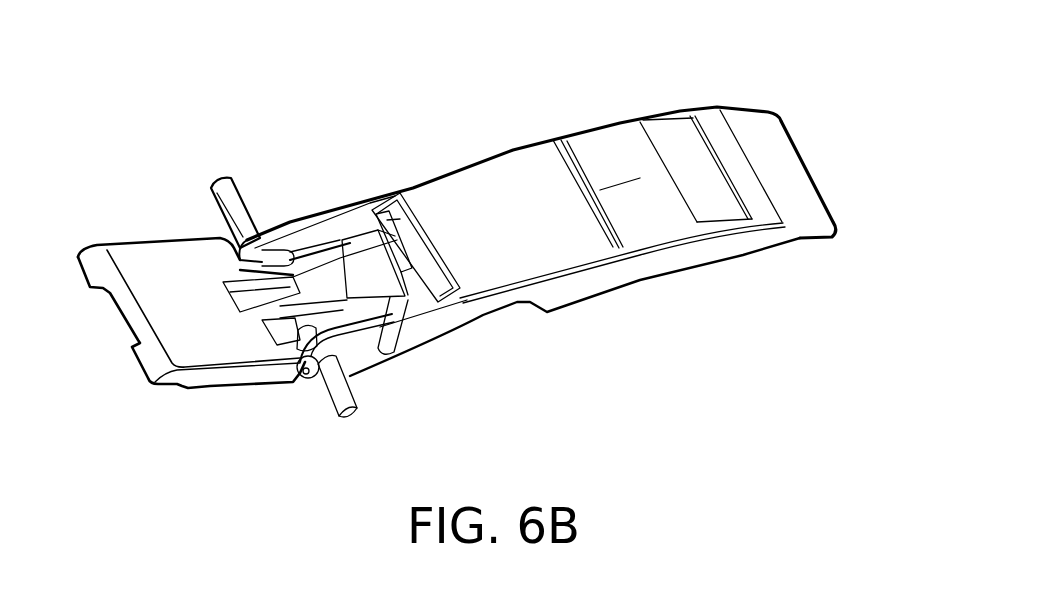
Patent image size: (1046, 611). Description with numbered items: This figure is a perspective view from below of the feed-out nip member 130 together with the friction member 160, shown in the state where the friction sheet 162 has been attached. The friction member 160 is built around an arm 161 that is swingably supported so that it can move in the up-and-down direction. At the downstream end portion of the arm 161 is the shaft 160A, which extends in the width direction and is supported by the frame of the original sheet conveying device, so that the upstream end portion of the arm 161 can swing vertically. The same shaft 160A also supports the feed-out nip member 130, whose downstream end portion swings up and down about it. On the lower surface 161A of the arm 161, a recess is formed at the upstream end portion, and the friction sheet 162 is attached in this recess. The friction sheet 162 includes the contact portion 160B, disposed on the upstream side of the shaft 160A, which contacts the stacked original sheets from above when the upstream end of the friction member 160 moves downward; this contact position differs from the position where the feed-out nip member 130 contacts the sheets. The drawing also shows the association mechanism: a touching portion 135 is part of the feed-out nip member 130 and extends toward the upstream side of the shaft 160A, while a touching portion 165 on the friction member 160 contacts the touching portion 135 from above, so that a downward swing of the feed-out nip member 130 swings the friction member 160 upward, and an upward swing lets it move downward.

The feed-out nip member 130 is at (146, 242).
The shaft 160A is at (227, 192).
The friction member 160 is at (325, 207).
The touching portion 165 is at (363, 229).
The lower surface 161A is at (513, 182).
The friction sheet 162 is at (672, 147).
The contact portion 160B is at (625, 200).
The touching portion 135 is at (377, 273).
The arm 161 is at (427, 333).